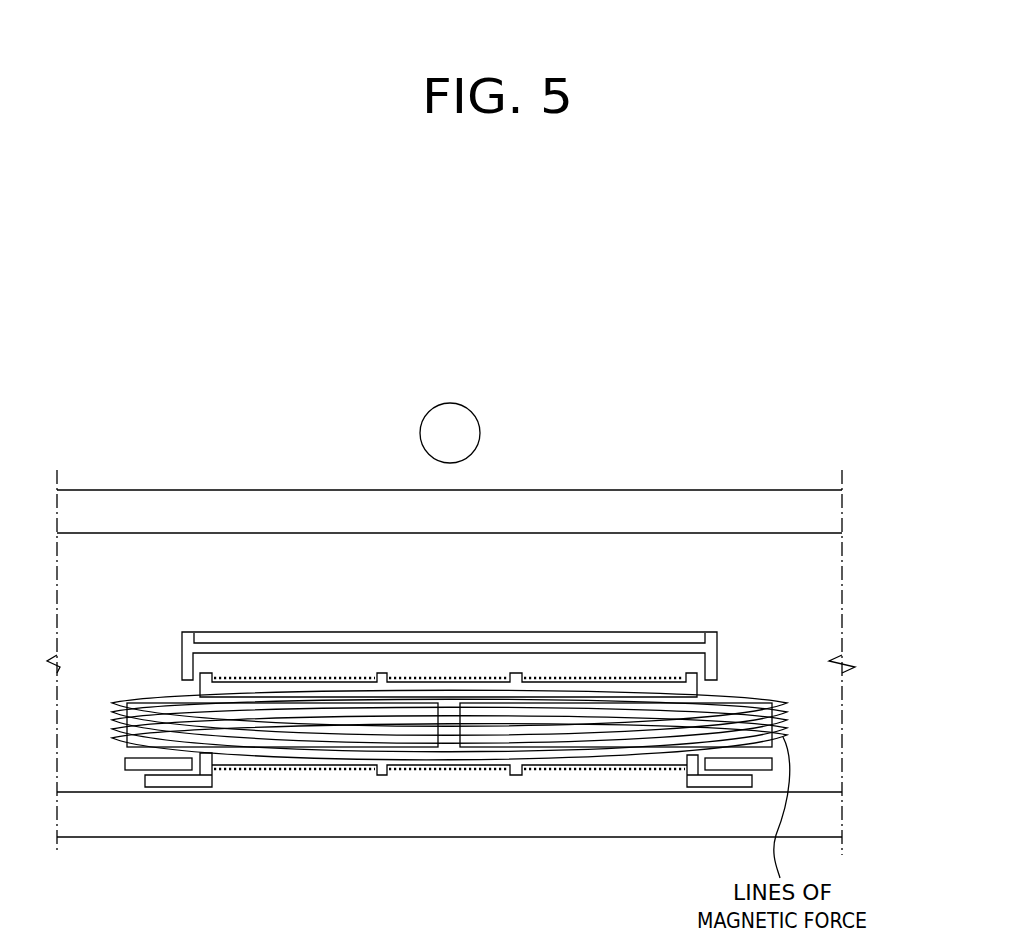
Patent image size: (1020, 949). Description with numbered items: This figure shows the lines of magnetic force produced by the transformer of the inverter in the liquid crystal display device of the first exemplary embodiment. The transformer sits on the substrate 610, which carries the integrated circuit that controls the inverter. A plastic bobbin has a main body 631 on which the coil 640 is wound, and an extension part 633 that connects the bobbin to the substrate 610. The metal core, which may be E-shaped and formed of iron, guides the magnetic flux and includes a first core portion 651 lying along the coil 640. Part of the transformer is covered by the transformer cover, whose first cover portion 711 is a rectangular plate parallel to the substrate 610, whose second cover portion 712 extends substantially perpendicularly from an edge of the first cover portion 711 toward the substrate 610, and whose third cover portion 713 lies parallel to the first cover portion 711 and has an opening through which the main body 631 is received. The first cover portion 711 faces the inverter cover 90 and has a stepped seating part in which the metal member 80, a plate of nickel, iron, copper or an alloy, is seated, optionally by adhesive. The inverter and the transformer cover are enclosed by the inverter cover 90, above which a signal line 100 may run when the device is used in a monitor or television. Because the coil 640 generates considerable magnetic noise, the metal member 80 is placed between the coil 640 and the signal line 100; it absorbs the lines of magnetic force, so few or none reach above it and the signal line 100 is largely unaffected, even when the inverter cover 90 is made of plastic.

The inverter cover 90 is at (682, 510).
The signal line 100 is at (470, 433).
The metal member 80 is at (680, 633).
The first cover portion 711 is at (717, 637).
The second cover portion 712 is at (717, 667).
The main body 631 is at (262, 690).
The coil 640 is at (330, 770).
The extension part 633 is at (178, 782).
The third cover portion 713 is at (130, 763).
The first core portion 651 is at (648, 733).
The substrate 610 is at (512, 818).